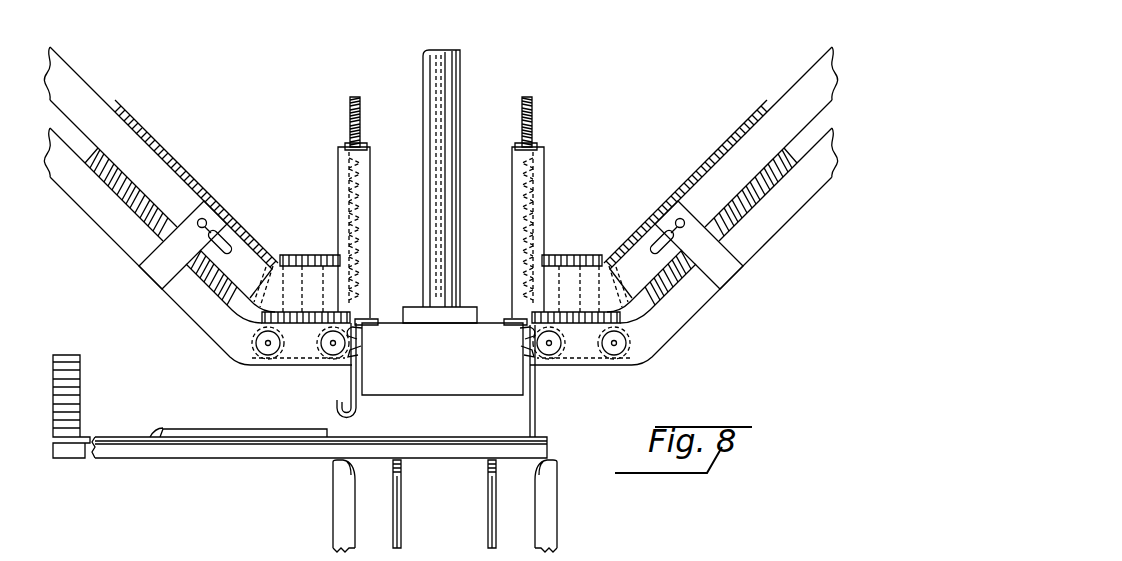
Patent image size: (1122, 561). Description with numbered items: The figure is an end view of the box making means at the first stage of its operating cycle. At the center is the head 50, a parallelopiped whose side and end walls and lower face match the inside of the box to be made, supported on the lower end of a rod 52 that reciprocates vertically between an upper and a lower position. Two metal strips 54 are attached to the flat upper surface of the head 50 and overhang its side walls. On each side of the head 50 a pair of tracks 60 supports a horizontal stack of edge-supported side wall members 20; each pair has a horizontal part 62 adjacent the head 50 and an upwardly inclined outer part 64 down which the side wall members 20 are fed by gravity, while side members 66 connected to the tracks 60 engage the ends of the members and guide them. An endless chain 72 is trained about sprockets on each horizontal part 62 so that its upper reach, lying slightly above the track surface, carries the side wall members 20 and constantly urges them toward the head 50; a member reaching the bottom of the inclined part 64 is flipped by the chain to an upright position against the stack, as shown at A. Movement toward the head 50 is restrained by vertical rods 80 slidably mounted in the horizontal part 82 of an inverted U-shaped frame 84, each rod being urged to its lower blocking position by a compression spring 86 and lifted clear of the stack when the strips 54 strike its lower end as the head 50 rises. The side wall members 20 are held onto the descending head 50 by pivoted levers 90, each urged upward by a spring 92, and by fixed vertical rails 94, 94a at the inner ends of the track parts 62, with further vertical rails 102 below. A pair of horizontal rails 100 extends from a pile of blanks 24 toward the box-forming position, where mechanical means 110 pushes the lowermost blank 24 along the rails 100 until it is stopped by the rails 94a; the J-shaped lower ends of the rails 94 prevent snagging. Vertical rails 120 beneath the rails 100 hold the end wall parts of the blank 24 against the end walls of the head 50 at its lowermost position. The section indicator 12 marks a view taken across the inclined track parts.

The side wall member 20 is at (142, 121).
The side members 66 is at (158, 164).
The upwardly inclined outer part 64 is at (120, 236).
The tracks 60 is at (179, 311).
The vertical rods 80 is at (338, 228).
The horizontal part 82 is at (338, 153).
The frame 84 is at (338, 178).
The compression spring 86 is at (338, 205).
The section line 12 is at (272, 170).
The flipped side wall member position A is at (283, 254).
The rod 52 is at (452, 77).
The head 50 is at (473, 387).
The metal strips 54 is at (366, 320).
The levers 90 is at (360, 336).
The spring 92 is at (361, 349).
The endless chain 72 is at (280, 366).
The horizontal part 62 is at (301, 370).
The vertical rails 94 is at (350, 390).
The vertical rails 94a is at (536, 423).
The blank 24 is at (82, 389).
The rails 100 is at (262, 449).
The mechanical means 110 is at (158, 436).
The vertical rails 102 is at (333, 515).
The vertical rails 120 is at (488, 513).